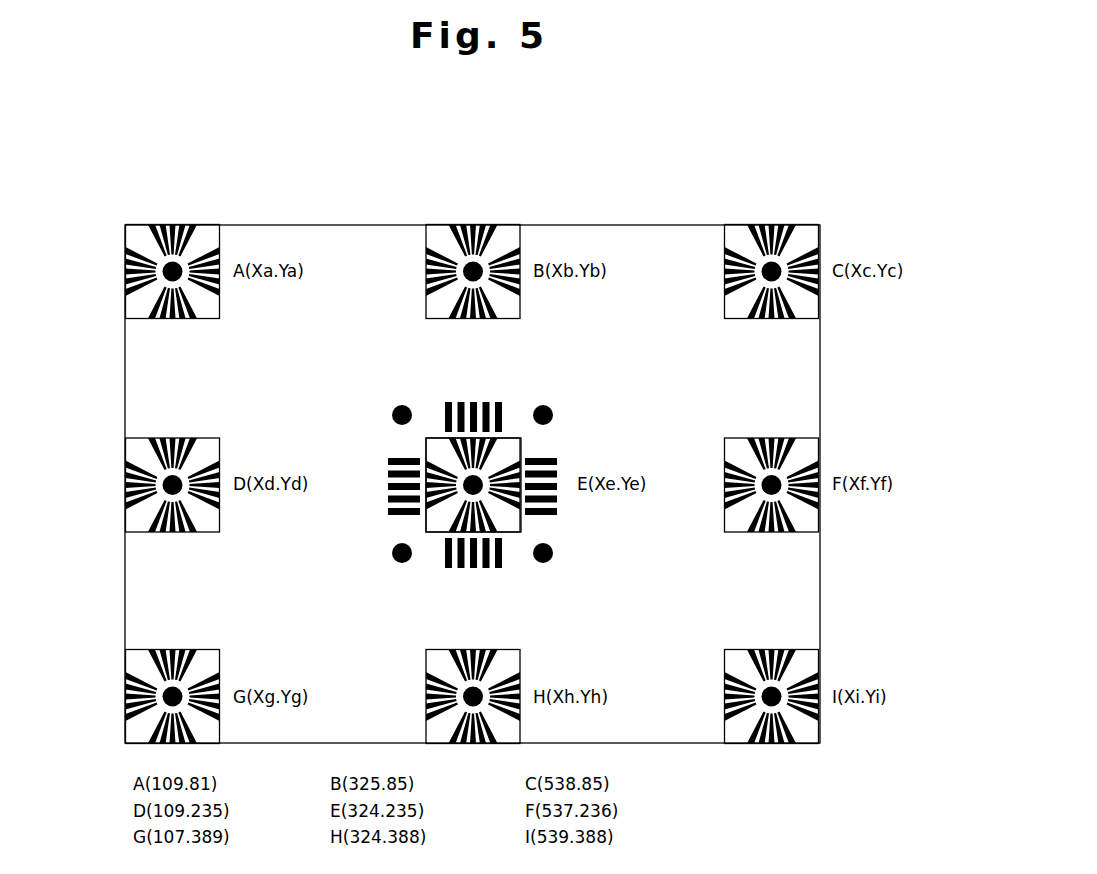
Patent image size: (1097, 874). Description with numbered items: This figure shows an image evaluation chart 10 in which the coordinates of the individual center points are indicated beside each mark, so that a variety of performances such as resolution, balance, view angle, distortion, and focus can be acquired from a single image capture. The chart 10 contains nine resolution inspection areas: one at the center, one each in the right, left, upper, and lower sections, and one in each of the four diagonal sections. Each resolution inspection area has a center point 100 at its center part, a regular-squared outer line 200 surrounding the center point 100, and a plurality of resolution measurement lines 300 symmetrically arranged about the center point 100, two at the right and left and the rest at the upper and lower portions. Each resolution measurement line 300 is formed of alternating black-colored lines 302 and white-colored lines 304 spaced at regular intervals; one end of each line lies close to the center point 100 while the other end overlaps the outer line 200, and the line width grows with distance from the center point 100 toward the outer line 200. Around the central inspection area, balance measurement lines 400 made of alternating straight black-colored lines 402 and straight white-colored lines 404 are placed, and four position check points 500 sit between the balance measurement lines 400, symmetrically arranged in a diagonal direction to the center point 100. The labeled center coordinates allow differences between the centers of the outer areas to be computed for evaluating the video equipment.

The chart 10 is at (140, 397).
The center point 100 is at (464, 476).
The regular-squared outer line 200 is at (522, 523).
The resolution measurement line 300 is at (592, 339).
The black-colored lines 302 is at (518, 457).
The white-colored lines 304 is at (555, 457).
The balance measurement line 400 is at (675, 427).
The straight black-colored lines 402 is at (525, 458).
The straight white-colored lines 404 is at (556, 467).
The position check point 500 is at (394, 409).